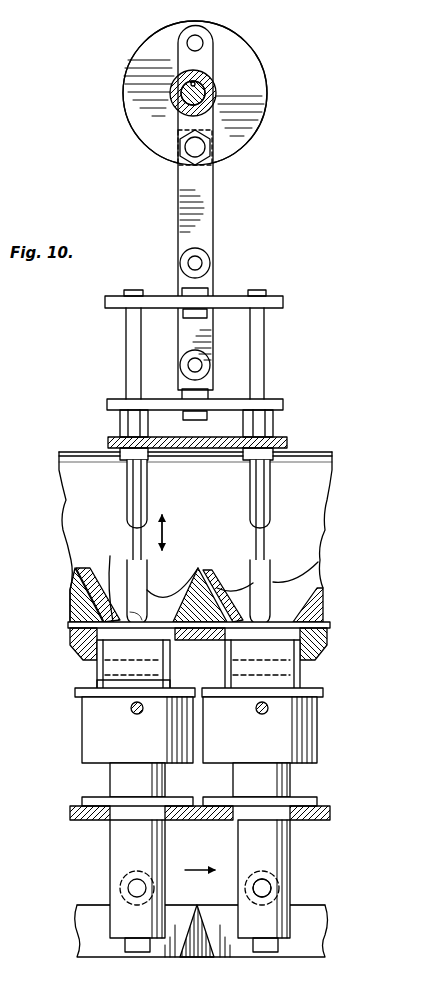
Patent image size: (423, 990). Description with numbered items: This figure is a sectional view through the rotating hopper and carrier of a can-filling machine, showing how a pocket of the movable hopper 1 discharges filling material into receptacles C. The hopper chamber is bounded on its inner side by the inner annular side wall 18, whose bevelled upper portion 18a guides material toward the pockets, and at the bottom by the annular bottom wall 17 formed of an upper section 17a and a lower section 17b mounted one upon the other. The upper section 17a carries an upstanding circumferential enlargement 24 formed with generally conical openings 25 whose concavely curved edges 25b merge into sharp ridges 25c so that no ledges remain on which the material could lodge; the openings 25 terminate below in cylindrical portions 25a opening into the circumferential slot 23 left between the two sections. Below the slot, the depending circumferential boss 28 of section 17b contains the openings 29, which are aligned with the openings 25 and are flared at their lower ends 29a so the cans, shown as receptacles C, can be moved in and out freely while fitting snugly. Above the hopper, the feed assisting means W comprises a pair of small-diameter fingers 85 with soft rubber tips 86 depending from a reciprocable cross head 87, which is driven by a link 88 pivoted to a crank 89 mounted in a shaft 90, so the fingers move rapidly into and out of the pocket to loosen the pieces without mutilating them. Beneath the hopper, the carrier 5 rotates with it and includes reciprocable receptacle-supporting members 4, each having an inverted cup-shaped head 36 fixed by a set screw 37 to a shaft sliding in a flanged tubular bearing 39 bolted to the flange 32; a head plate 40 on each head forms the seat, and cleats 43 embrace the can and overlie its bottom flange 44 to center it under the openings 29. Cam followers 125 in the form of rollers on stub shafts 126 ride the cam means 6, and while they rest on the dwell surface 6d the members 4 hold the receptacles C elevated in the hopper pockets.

The shaft 90 is at (220, 86).
The crank 89 is at (232, 150).
The link 88 is at (200, 230).
The cross head 87 is at (235, 296).
The feed assisting means W is at (296, 436).
The movable hopper 1 is at (73, 450).
The inner annular side wall 18 is at (72, 540).
The bevelled upper portion 18a is at (78, 476).
The fingers 85 is at (137, 492).
The annular bottom wall 17 is at (66, 612).
The upper bottom wall section 17a is at (62, 584).
The lower bottom wall section 17b is at (70, 637).
The cylindrical portions 25a is at (105, 585).
The sharp edges or ridges 25c is at (200, 580).
The upstanding circumferential enlargement 24 is at (207, 575).
The conical openings 25 is at (236, 590).
The concavely curved edges 25b is at (300, 578).
The flexible tips 86 is at (140, 616).
The slot 23 is at (68, 625).
The openings 29 is at (280, 642).
The depending circumferential boss 28 is at (95, 652).
The flared discharge portions 29a is at (100, 675).
The receptacles C is at (148, 636).
The cleats 43 is at (318, 682).
The head plate 40 is at (78, 698).
The inverted cup-shaped head 36 is at (82, 744).
The set screw 37 is at (137, 716).
The flanges 44 is at (250, 700).
The receptacle-supporting members 4 is at (80, 762).
The carrier 5 is at (68, 813).
The flange 32 is at (98, 822).
The flanged tubular bearing 39 is at (243, 845).
The cam followers 125 is at (122, 880).
The stub shafts 126 is at (275, 889).
The dwell surface 6d is at (77, 905).
The cam means 6 is at (76, 935).